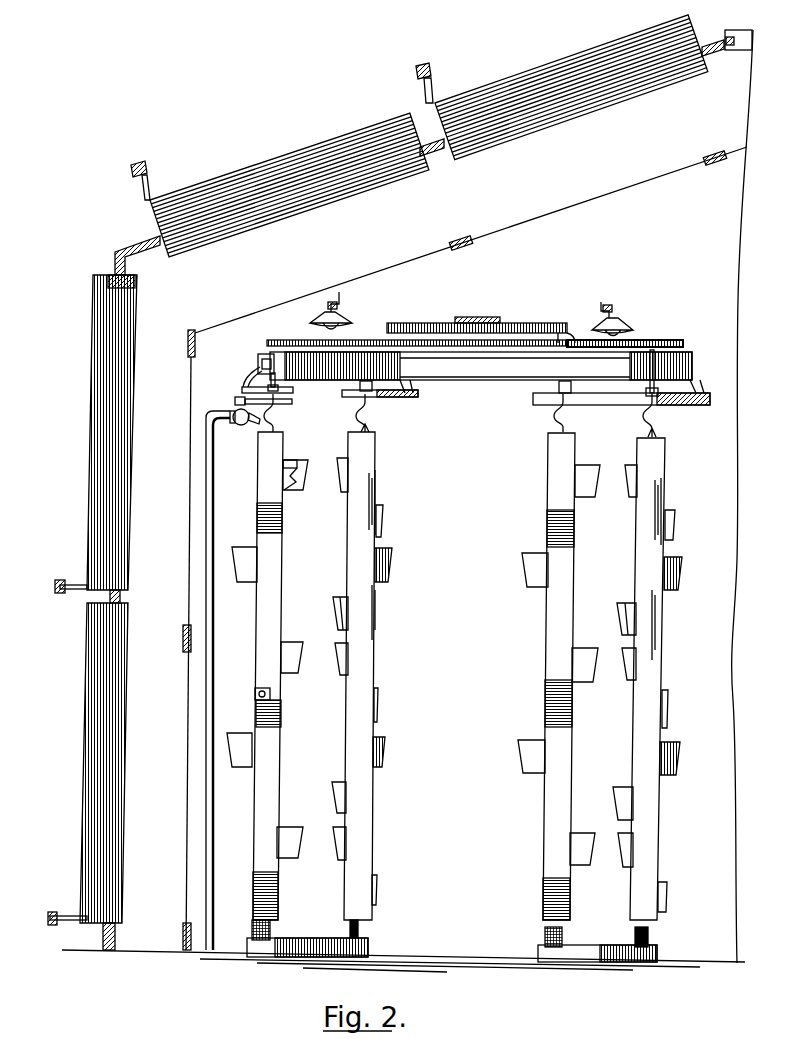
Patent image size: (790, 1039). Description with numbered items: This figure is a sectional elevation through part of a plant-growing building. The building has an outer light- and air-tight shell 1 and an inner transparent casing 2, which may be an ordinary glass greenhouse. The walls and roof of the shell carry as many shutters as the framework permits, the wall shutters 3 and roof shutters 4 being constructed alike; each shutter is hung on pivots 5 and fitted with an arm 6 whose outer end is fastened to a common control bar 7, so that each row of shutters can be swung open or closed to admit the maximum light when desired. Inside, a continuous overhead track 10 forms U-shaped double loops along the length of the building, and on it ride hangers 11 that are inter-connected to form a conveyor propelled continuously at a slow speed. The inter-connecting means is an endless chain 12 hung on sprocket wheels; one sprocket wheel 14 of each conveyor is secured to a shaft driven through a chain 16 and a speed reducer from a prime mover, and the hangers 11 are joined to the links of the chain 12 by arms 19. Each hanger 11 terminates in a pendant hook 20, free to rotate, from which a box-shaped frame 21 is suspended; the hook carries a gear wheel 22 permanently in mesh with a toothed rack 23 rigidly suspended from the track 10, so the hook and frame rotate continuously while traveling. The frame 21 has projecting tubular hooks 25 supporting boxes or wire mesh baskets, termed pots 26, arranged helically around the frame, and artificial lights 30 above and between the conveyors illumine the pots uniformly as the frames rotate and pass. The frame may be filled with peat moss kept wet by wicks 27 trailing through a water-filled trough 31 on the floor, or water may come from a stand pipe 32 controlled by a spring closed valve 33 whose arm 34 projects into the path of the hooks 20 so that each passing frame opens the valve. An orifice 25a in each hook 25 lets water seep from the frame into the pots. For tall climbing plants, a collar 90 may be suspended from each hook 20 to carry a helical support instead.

The outer shell 1 is at (110, 250).
The inner transparent casing 2 is at (469, 243).
The wall shutter 3 is at (97, 418).
The roof shutter 4 is at (345, 148).
The pivot 5 is at (112, 278).
The arm 6 is at (150, 192).
The control bar 7 is at (146, 164).
The track 10 is at (266, 356).
The hanger 11 is at (259, 364).
The endless chain 12 is at (684, 347).
The sprocket wheel 14 is at (410, 330).
The chain 16 is at (523, 324).
The arm 19 is at (270, 342).
The pendant hook 20 is at (277, 410).
The box-shaped frame 21 is at (376, 490).
The gear wheel 22 is at (282, 391).
The toothed rack 23 is at (243, 388).
The projecting hook 25 is at (299, 462).
The orifice 25a is at (257, 700).
The pot 26 is at (298, 660).
The wick 27 is at (252, 930).
The artificial light 30 is at (344, 320).
The trough 31 is at (296, 942).
The stand pipe 32 is at (214, 528).
The spring closed valve 33 is at (236, 410).
The valve arm 34 is at (235, 399).
The collar 90 is at (341, 299).